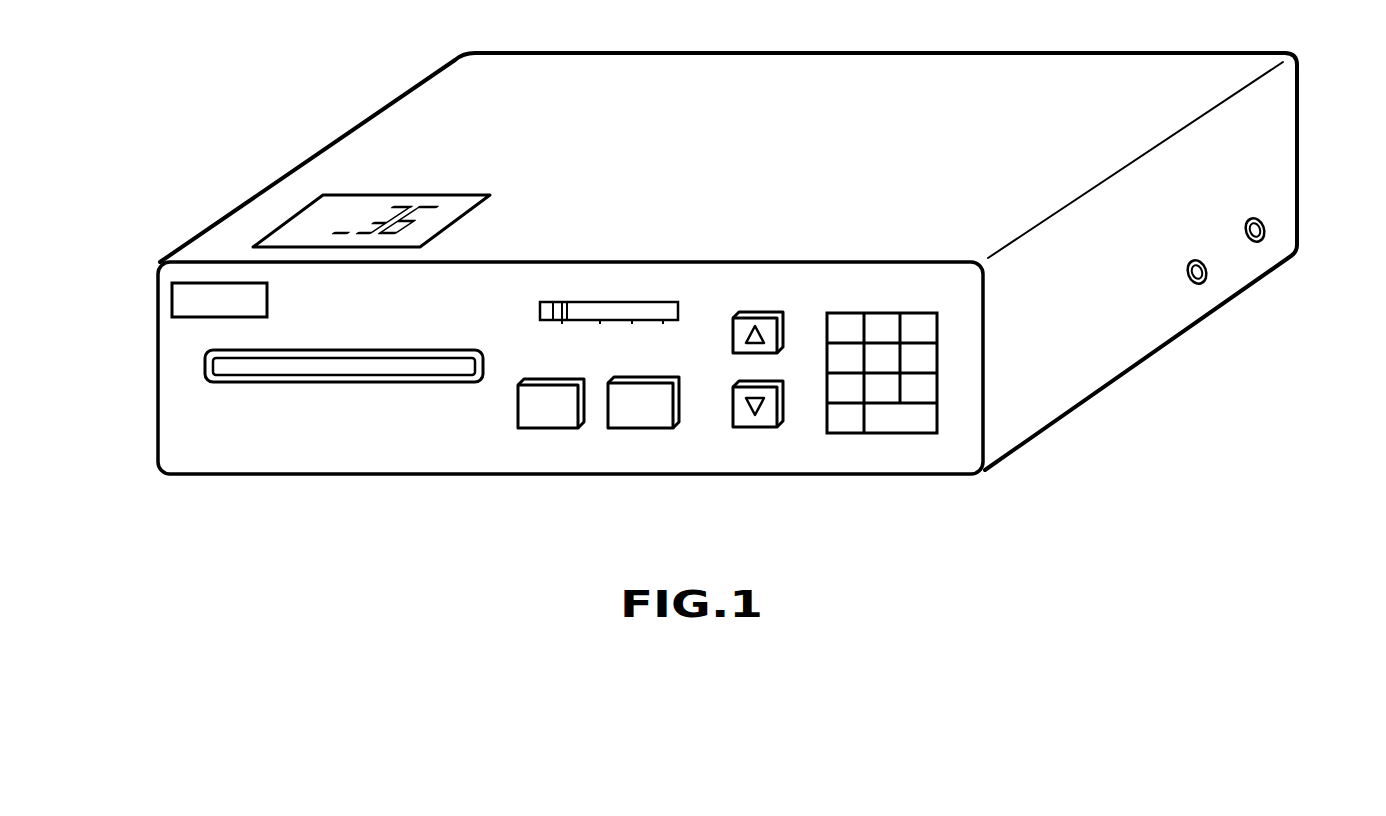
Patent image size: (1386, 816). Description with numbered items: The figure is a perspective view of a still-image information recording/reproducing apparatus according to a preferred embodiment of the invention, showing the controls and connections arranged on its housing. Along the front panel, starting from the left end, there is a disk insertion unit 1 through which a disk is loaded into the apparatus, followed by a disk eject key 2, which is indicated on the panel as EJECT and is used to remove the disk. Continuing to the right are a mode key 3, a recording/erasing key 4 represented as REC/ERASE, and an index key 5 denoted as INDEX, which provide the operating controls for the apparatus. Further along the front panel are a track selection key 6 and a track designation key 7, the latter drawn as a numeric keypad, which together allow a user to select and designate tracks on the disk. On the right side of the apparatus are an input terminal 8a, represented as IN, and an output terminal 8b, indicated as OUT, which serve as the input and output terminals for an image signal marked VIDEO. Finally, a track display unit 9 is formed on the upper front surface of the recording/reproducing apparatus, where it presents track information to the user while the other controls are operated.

The disk insertion unit 1 is at (247, 383).
The disk eject key 2 is at (172, 297).
The mode key 3 is at (567, 302).
The recording/erasing key 4 is at (537, 430).
The index key 5 is at (645, 428).
The track selection key 6 is at (750, 428).
The track designation key 7 is at (882, 313).
The input terminal 8a is at (1208, 272).
The output terminal 8b is at (1266, 222).
The track display unit 9 is at (423, 196).